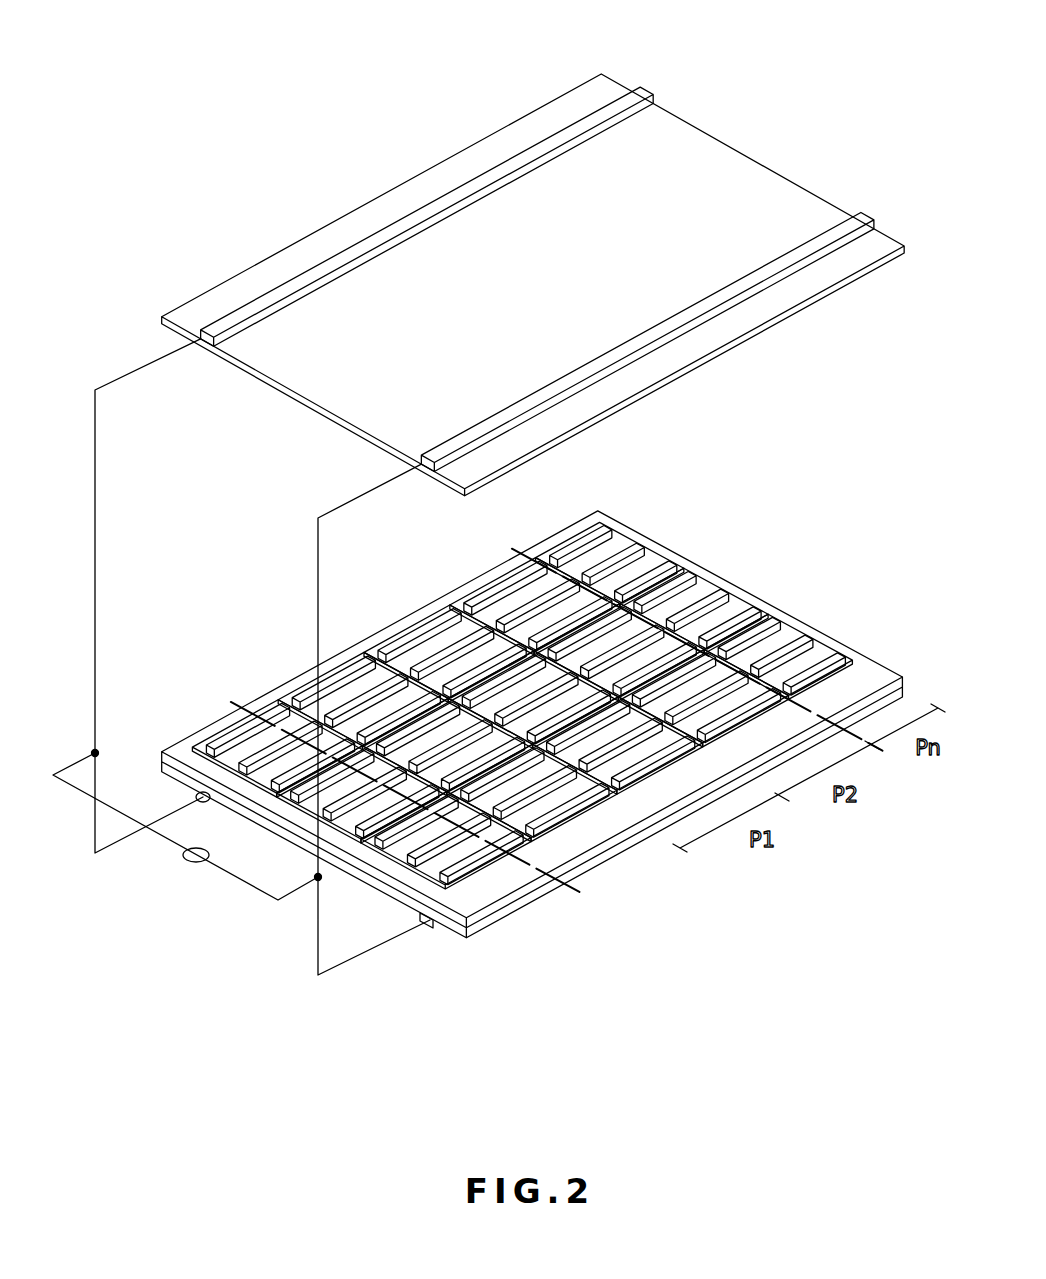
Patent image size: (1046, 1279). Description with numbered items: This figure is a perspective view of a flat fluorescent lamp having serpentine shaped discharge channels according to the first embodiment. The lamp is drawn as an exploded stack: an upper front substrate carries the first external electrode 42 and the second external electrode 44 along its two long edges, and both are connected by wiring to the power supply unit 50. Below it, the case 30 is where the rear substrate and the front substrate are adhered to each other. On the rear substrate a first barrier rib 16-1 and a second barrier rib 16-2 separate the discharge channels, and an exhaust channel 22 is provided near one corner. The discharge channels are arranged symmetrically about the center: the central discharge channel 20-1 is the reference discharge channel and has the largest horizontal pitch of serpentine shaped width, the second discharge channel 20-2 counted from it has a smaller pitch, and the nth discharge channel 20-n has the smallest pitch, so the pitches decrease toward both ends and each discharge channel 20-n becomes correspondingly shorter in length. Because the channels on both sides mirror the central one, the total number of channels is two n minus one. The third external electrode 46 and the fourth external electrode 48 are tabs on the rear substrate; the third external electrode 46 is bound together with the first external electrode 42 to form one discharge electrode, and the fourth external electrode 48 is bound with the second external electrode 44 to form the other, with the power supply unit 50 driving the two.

The first external electrode 42 is at (637, 89).
The second external electrode 44 is at (862, 211).
The case 30 is at (497, 890).
The exhaust channel 22 is at (277, 748).
The first barrier rib 16-1 is at (334, 683).
The second barrier rib 16-2 is at (248, 730).
The central discharge channel 20-1 is at (448, 653).
The second discharge channel 20-2 is at (534, 606).
The nth discharge channel 20-n is at (600, 556).
The third external electrode 46 is at (197, 797).
The fourth external electrode 48 is at (430, 928).
The power supply unit 50 is at (195, 863).